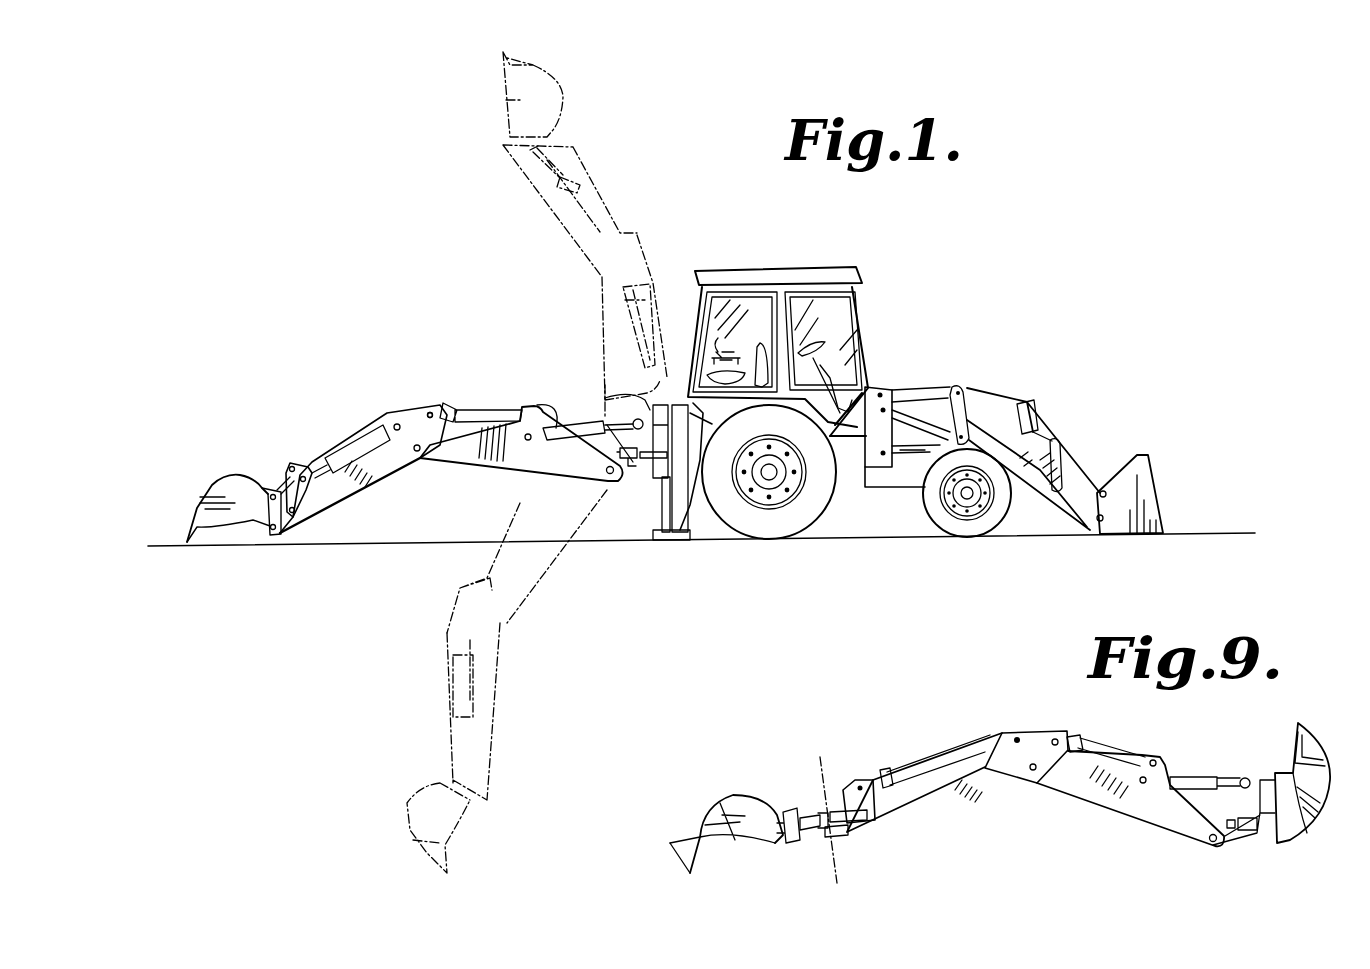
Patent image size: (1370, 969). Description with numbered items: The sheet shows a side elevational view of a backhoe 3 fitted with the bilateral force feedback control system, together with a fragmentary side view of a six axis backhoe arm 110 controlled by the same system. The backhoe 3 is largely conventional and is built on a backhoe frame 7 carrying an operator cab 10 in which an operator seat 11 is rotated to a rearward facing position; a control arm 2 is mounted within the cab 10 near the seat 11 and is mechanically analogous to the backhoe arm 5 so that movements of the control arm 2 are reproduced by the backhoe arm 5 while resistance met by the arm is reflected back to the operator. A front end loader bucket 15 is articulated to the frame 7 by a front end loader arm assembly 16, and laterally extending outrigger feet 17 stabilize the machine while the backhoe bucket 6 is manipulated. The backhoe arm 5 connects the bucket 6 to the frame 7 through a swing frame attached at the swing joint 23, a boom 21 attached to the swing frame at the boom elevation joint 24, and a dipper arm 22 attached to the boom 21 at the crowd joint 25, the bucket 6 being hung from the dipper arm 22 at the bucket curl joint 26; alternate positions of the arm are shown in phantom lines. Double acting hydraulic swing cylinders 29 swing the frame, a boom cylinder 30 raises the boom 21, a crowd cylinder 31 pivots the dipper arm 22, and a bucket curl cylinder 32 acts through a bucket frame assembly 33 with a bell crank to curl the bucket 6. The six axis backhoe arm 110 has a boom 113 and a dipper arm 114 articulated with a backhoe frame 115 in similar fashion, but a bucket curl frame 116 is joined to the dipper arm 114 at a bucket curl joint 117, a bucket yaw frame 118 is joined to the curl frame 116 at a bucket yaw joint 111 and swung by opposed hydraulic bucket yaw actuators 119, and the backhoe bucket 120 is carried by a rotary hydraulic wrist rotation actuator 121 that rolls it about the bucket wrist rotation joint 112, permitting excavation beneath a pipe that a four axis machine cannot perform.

In FIG. 1, the control arm 2 is at (726, 344).
In FIG. 1, the backhoe 3 is at (852, 268).
In FIG. 1, the backhoe arm 5 is at (413, 398).
In FIG. 1, the backhoe bucket 6 is at (240, 475).
In FIG. 1, the backhoe frame 7 is at (882, 492).
In FIG. 1, the operator cab 10 is at (858, 350).
In FIG. 1, the operator seat 11 is at (757, 372).
In FIG. 1, the front end loader bucket 15 is at (1148, 496).
In FIG. 1, the front end loader arm assembly 16 is at (1064, 495).
In FIG. 1, the outrigger feet 17 is at (672, 513).
In FIG. 1, the boom 21 is at (505, 478).
In FIG. 1, the dipper arm 22 is at (330, 500).
In FIG. 1, the swing joint 23 is at (612, 398).
In FIG. 1, the boom elevation joint 24 is at (580, 480).
In FIG. 1, the crowd joint 25 is at (418, 455).
In FIG. 1, the bucket curl joint 26 is at (278, 538).
In FIG. 1, the hydraulic swing cylinders 29 is at (640, 462).
In FIG. 1, the hydraulic boom cylinder 30 is at (537, 404).
In FIG. 1, the hydraulic crowd cylinder 31 is at (478, 409).
In FIG. 1, the hydraulic bucket curl cylinder 32 is at (360, 443).
In FIG. 1, the bucket frame assembly 33 is at (290, 465).
In FIG. 9, the six axis backhoe arm 110 is at (1023, 717).
In FIG. 9, the bucket yaw joint 111 is at (820, 750).
In FIG. 9, the bucket wrist rotation joint 112 is at (682, 840).
In FIG. 9, the boom 113 is at (1165, 828).
In FIG. 9, the dipper arm 114 is at (948, 805).
In FIG. 9, the backhoe frame 115 is at (1285, 828).
In FIG. 9, the bucket curl frame 116 is at (850, 778).
In FIG. 9, the bucket curl joint 117 is at (870, 822).
In FIG. 9, the bucket yaw frame 118 is at (810, 808).
In FIG. 9, the hydraulic bucket yaw actuators 119 is at (843, 835).
In FIG. 9, the backhoe bucket 120 is at (745, 795).
In FIG. 9, the rotary hydraulic wrist rotation actuator 121 is at (798, 840).